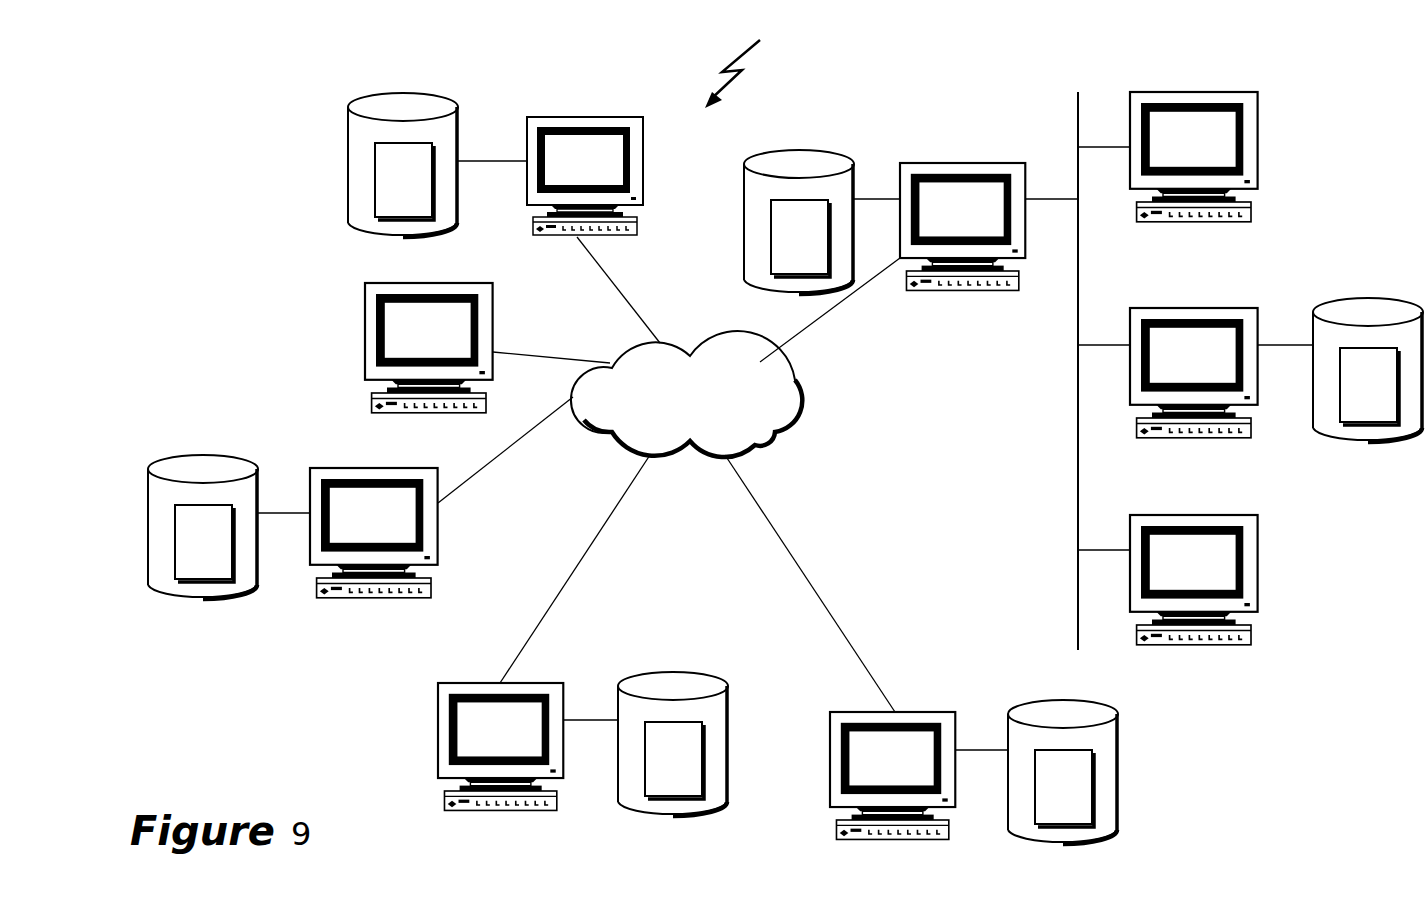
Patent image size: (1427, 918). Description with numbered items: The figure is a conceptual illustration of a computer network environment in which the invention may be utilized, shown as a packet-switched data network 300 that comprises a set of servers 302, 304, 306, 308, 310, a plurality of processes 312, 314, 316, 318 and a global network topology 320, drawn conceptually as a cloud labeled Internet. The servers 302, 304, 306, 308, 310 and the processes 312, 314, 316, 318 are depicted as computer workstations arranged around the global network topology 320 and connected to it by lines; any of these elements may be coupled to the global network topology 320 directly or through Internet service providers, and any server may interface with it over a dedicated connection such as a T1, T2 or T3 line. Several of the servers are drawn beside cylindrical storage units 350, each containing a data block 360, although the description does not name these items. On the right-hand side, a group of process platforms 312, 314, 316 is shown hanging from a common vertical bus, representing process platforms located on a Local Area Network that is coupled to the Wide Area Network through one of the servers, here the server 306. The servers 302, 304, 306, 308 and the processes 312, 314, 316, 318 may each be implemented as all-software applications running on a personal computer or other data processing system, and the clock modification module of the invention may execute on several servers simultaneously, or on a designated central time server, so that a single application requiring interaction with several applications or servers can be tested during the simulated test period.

The packet-switched data network 300 is at (743, 62).
The server 302 is at (587, 116).
The server 304 is at (347, 467).
The server 306 is at (935, 162).
The server 308 is at (862, 840).
The server 310 is at (437, 718).
The process 312 is at (1262, 127).
The process 314 is at (1168, 307).
The process 316 is at (1262, 560).
The process 318 is at (363, 325).
The global network topology 320 is at (768, 438).
The database 350 is at (368, 106).
The data record 360 is at (385, 188).